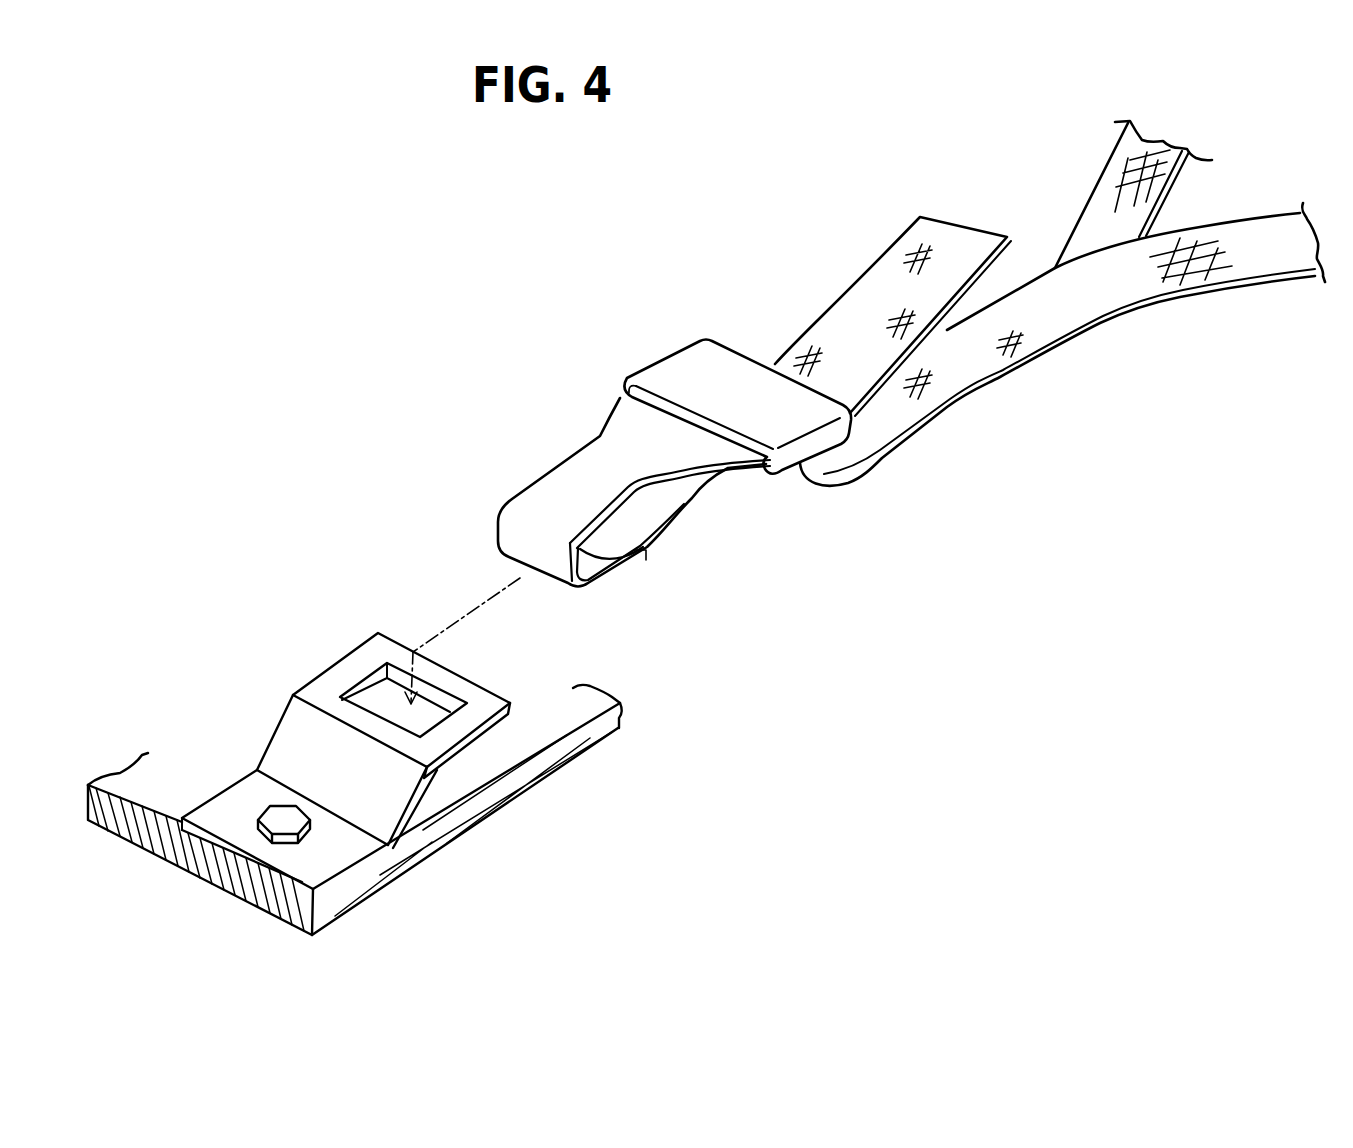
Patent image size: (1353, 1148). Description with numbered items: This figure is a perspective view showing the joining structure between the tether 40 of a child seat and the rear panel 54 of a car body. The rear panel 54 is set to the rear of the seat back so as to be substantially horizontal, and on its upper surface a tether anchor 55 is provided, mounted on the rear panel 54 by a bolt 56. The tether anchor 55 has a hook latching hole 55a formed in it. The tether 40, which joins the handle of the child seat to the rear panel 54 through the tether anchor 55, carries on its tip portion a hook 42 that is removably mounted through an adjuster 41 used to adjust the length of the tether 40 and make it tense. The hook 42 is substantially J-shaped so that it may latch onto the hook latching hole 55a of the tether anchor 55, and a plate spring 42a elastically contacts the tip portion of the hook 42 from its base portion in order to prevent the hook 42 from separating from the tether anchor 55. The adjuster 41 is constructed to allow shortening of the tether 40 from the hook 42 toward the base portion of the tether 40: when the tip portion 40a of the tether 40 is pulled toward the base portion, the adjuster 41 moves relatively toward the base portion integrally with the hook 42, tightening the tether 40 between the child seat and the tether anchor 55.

The tether 40 is at (984, 368).
The tip portion of the tether 40a is at (973, 222).
The adjuster 41 is at (735, 363).
The hook 42 is at (543, 497).
The plate spring 42a is at (642, 524).
The rear panel 54 is at (556, 722).
The tether anchor 55 is at (314, 690).
The hook latching hole 55a is at (433, 712).
The bolt 56 is at (262, 808).